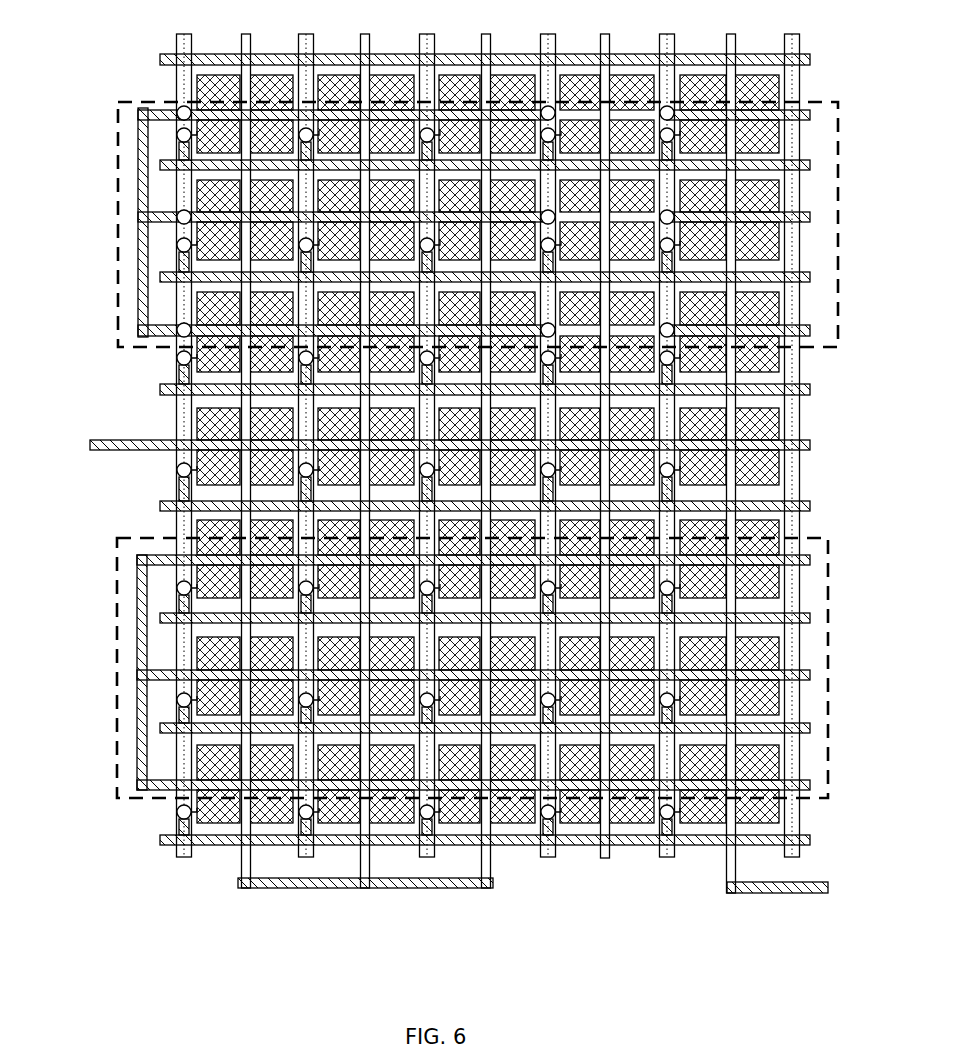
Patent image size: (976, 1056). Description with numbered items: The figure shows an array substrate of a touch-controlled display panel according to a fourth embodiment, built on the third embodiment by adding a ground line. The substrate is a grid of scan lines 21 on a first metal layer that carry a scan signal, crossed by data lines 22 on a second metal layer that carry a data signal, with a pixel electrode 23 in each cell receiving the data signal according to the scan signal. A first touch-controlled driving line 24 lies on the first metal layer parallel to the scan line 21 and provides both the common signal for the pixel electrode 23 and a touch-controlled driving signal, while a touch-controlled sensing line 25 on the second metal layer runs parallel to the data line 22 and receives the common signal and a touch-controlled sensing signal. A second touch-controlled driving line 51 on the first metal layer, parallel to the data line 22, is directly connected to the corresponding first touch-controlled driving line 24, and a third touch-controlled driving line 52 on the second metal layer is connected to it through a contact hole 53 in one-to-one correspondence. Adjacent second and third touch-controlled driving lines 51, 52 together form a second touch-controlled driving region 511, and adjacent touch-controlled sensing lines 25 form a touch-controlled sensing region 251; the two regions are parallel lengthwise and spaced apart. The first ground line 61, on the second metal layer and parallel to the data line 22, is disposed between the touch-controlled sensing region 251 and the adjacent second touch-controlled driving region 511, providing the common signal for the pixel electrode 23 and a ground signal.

The scan line 21 is at (183, 855).
The data line 22 is at (615, 845).
The pixel electrode 23 is at (193, 412).
The first touch-controlled driving line 24 is at (492, 852).
The touch-controlled sensing line 25 is at (163, 555).
The touch-controlled sensing region 251 is at (117, 662).
The second touch-controlled driving line 51 is at (180, 328).
The third touch-controlled driving line 52 is at (163, 334).
The contact hole 53 is at (137, 112).
The second touch-controlled driving region 511 is at (117, 207).
The first ground line 61 is at (107, 455).